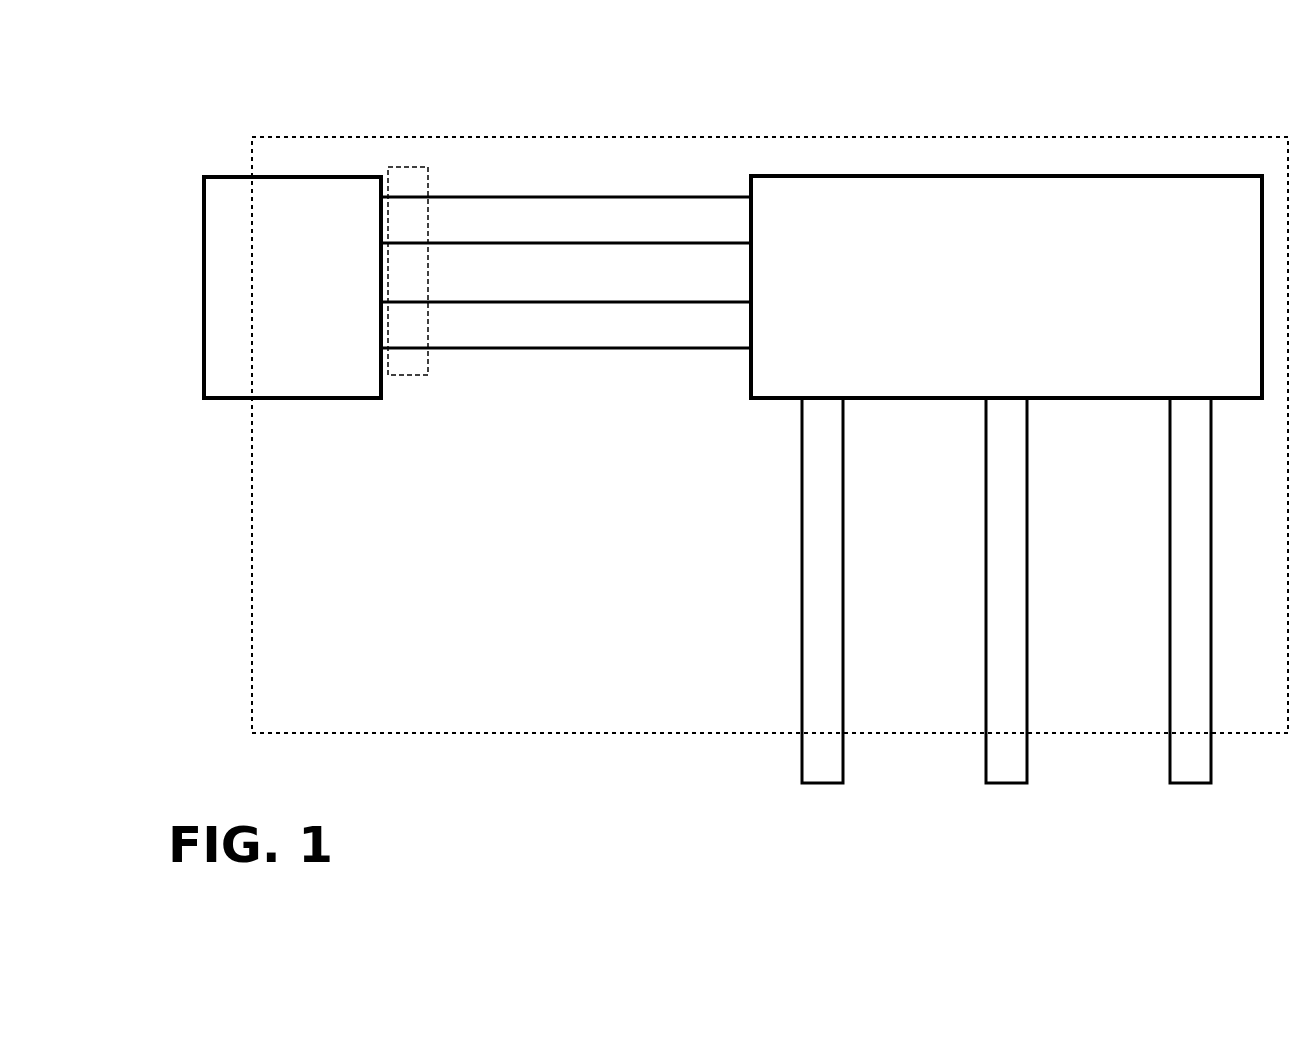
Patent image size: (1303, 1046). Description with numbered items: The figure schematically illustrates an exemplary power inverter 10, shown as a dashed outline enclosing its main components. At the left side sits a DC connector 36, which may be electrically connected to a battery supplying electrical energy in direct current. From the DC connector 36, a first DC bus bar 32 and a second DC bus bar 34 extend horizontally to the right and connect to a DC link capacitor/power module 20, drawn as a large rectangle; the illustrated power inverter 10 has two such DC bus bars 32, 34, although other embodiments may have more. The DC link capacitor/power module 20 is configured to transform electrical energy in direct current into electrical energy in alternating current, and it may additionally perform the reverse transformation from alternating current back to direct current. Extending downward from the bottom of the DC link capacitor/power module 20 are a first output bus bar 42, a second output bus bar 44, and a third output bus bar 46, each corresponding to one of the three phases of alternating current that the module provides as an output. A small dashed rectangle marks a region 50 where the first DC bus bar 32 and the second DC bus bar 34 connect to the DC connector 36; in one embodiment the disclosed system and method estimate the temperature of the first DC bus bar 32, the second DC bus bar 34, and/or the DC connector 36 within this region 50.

The power inverter 10 is at (1170, 135).
The DC link capacitor/power module 20 is at (945, 175).
The first DC bus bar 32 is at (589, 196).
The second DC bus bar 34 is at (538, 350).
The DC connector 36 is at (203, 249).
The first output bus bar 42 is at (813, 523).
The second output bus bar 44 is at (1008, 523).
The third output bus bar 46 is at (1185, 523).
The region 50 is at (407, 166).